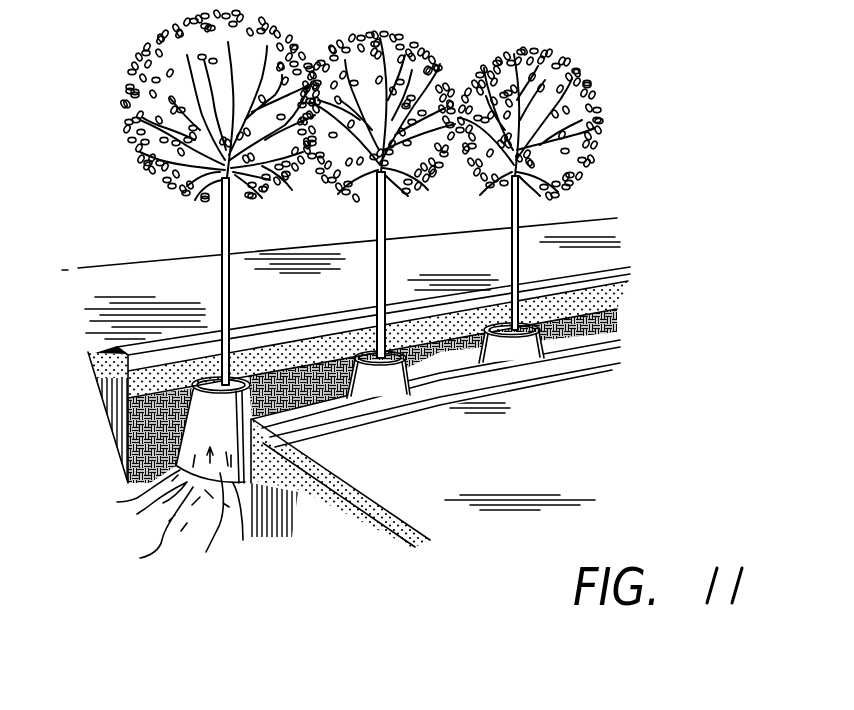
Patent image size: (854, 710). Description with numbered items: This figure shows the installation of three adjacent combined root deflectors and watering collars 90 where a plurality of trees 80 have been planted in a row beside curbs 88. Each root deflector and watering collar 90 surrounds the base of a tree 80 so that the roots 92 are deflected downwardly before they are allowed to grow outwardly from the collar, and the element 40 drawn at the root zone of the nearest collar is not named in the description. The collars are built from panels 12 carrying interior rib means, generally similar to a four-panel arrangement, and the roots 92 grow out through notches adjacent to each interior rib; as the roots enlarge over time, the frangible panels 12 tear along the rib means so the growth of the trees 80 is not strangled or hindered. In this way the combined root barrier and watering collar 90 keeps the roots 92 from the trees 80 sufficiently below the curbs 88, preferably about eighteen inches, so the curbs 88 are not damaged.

The panel 12 is at (368, 380).
The tree roots 40 is at (155, 523).
The tree 80 is at (220, 216).
The curb 88 is at (252, 341).
The root deflector and watering collar 90 is at (388, 374).
The root 92 is at (143, 530).